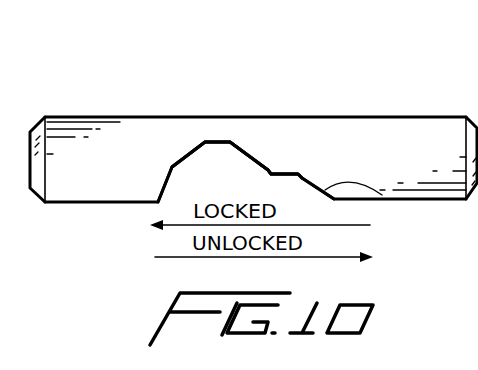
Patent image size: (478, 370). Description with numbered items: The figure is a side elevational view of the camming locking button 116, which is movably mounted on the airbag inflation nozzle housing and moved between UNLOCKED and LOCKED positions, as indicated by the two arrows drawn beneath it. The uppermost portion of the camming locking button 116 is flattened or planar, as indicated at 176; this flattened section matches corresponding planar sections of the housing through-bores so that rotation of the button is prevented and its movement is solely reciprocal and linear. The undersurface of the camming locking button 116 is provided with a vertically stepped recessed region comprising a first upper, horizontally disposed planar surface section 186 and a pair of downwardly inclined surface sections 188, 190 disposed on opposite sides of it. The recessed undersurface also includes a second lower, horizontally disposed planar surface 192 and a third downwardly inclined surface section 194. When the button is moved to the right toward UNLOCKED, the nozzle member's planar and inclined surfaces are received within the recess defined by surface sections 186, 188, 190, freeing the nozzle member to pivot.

The camming locking button 116 is at (352, 136).
The flattened or planar uppermost section 176 is at (192, 117).
The first upper, horizontally disposed planar surface section 186 is at (222, 142).
The downwardly inclined surface section 188 is at (187, 153).
The downwardly inclined surface section 190 is at (257, 153).
The second lower, horizontally disposed planar surface 192 is at (290, 170).
The third downwardly inclined surface section 194 is at (382, 203).